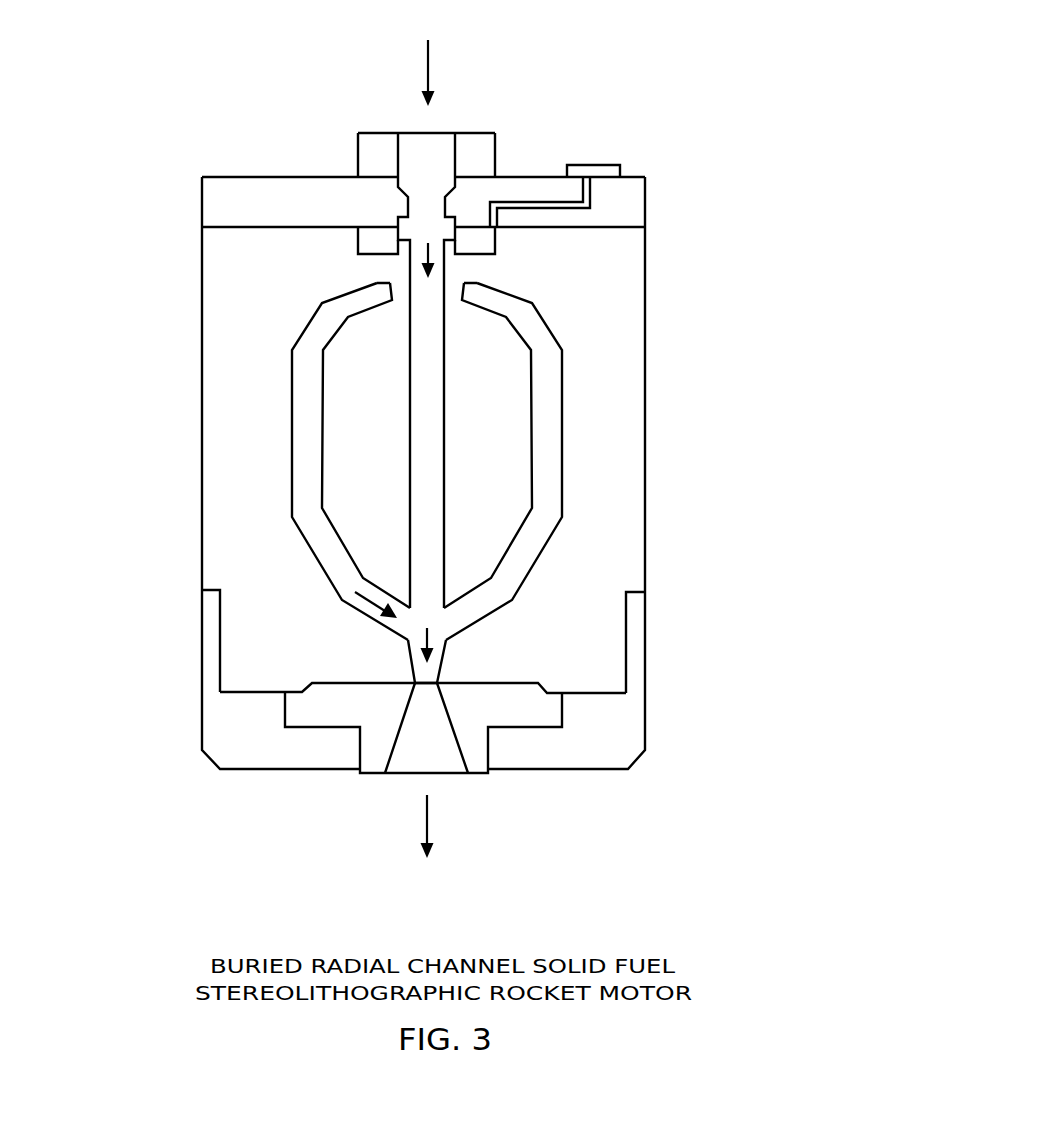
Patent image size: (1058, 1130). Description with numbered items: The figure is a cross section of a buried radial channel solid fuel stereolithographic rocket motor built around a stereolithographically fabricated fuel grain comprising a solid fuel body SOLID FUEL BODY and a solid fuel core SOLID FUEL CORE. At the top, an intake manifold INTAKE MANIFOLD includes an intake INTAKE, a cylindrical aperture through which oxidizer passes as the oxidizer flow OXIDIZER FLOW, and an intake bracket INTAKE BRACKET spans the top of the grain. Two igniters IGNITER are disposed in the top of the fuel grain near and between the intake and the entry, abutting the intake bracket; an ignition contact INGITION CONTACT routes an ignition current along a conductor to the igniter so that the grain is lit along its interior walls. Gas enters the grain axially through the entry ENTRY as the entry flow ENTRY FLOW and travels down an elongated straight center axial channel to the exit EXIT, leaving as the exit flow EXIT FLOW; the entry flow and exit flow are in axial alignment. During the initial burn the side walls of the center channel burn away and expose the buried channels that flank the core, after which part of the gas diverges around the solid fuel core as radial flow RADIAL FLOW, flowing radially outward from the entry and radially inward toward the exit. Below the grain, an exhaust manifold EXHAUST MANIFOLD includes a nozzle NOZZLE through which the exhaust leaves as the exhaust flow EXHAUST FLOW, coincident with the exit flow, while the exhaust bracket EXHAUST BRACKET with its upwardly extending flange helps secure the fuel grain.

The oxidizer flow OXIDIZER FLOW is at (430, 60).
The intake INTAKE is at (440, 133).
The intake manifold INTAKE MANIFOLD is at (358, 165).
The intake bracket INTAKE BRACKET is at (202, 212).
The ignition contact INGITION CONTACT is at (588, 165).
The igniter IGNITER is at (358, 241).
The entry ENTRY is at (445, 276).
The entry flow ENTRY FLOW is at (410, 257).
The solid fuel core SOLID FUEL CORE is at (465, 454).
The solid fuel body SOLID FUEL BODY is at (645, 435).
The radial flow RADIAL FLOW is at (342, 602).
The exit EXIT is at (412, 672).
The exit flow EXIT FLOW is at (443, 632).
The exhaust bracket EXHAUST BRACKET is at (643, 677).
The exhaust manifold EXHAUST MANIFOLD is at (363, 773).
The nozzle NOZZLE is at (438, 779).
The exhaust flow EXHAUST FLOW is at (432, 828).